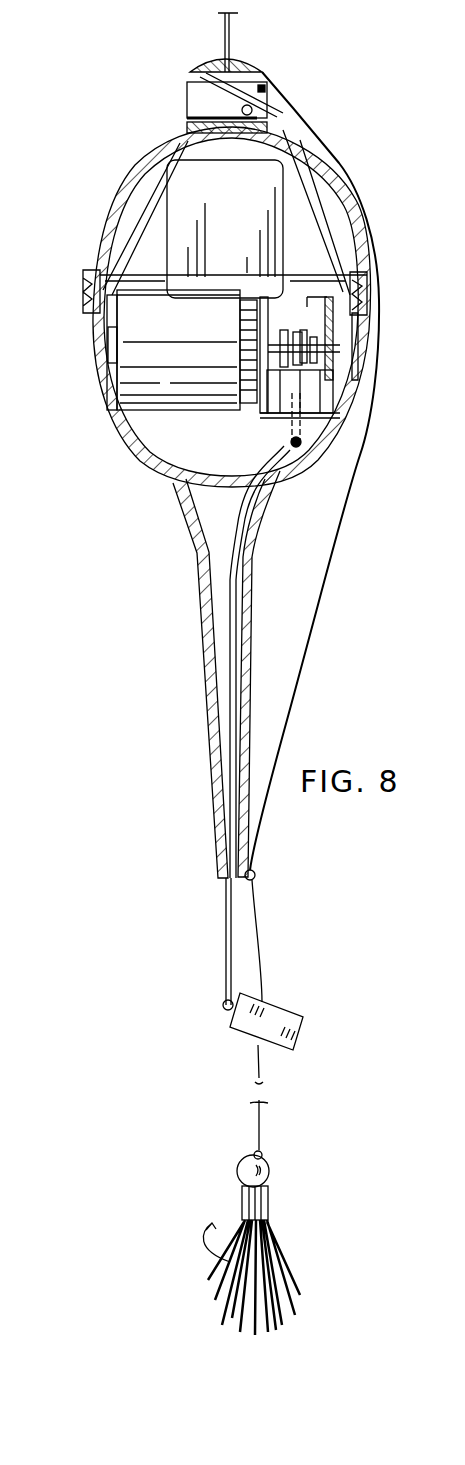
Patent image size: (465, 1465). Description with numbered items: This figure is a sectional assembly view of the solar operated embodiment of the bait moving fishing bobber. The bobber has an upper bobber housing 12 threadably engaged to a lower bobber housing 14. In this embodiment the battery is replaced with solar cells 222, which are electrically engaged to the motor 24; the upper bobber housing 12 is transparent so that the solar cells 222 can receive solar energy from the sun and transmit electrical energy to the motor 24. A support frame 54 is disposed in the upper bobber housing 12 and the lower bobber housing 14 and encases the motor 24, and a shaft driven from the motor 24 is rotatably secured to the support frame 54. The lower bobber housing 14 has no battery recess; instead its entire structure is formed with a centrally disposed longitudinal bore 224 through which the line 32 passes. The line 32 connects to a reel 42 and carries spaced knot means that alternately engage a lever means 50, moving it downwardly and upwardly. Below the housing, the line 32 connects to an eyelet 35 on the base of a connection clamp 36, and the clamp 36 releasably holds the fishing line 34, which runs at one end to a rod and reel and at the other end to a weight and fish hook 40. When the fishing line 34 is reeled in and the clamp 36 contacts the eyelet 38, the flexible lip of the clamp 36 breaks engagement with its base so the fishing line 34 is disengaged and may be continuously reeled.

The upper bobber housing 12 is at (331, 175).
The lower bobber housing 14 is at (358, 348).
The motor 24 is at (156, 322).
The line 32 is at (250, 593).
The fishing line 34 is at (228, 35).
The eyelet 35 is at (223, 1013).
The connection clamp 36 is at (283, 1010).
The eyelet 38 is at (253, 867).
The weight/fish hook 40 is at (311, 1170).
The reel 42 is at (330, 382).
The lever means 50 is at (325, 390).
The support frame 54 is at (332, 373).
The solar cells 222 is at (310, 170).
The longitudinal bore 224 is at (226, 639).